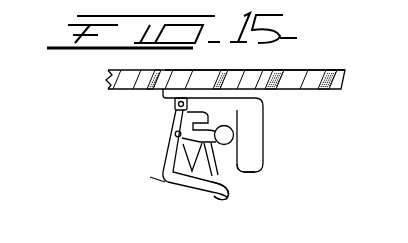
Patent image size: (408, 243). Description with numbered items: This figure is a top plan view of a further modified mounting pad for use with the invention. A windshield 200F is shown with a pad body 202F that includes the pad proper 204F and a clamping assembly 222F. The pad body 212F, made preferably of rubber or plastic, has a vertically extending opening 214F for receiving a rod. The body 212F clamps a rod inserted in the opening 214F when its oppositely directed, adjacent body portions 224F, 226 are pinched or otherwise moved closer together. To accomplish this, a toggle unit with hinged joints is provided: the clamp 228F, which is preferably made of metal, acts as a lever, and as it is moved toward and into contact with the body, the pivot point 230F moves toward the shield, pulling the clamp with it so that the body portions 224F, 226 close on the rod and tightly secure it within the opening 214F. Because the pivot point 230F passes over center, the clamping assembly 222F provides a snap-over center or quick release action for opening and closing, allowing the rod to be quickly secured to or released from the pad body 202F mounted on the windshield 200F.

The windshield 200F is at (317, 77).
The pad proper 204F is at (288, 72).
The pad body 202F is at (280, 122).
The pad body 212F is at (257, 173).
The body portion 226 is at (176, 112).
The clamping assembly 222F is at (154, 186).
The clamp 228F is at (150, 177).
The vertically extending opening 214F is at (176, 135).
The pivot point 230F is at (172, 152).
The body portion 224F is at (209, 199).